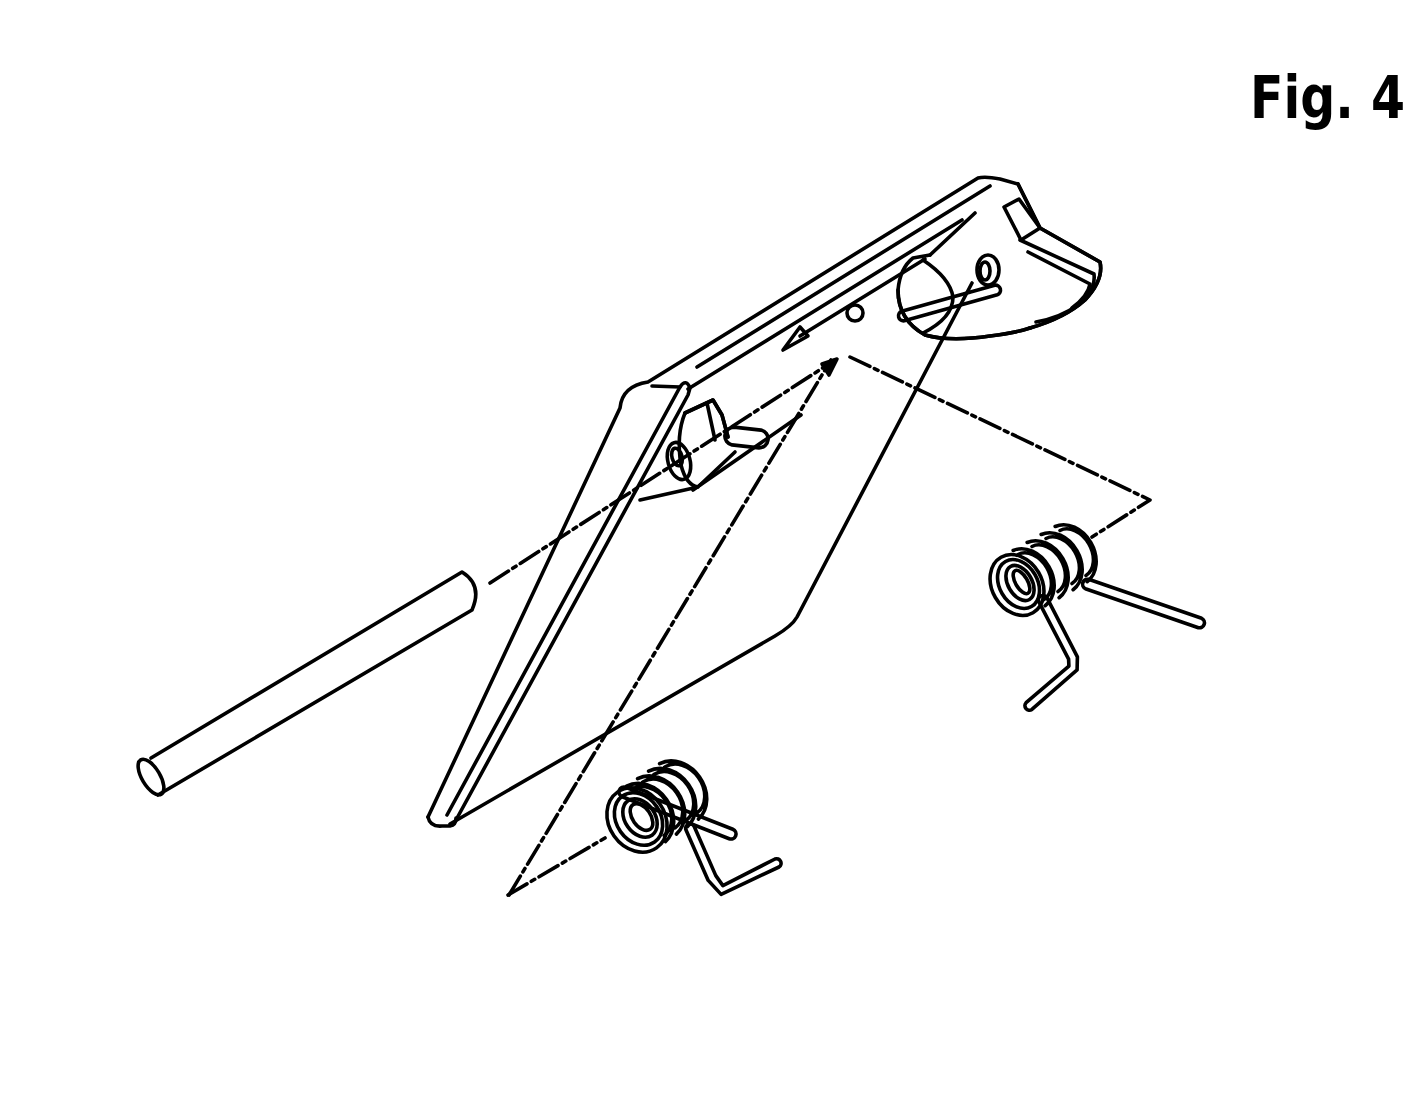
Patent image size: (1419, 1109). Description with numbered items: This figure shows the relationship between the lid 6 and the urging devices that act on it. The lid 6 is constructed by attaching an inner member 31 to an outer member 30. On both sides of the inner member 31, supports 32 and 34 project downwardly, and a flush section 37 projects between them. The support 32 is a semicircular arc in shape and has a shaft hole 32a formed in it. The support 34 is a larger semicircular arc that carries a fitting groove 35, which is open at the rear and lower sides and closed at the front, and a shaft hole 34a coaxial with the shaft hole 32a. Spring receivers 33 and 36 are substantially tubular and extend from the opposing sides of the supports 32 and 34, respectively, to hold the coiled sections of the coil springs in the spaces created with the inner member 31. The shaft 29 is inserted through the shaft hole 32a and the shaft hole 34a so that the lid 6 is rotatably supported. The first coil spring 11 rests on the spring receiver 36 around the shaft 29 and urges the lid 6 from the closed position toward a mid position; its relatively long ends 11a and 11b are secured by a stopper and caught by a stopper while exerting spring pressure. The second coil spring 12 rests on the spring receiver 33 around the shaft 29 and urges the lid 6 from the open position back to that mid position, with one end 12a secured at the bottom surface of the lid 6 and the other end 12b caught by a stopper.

The lid 6 is at (288, 822).
The first coil spring 11 is at (1000, 602).
The end of first coil spring 11a is at (1049, 708).
The end of first coil spring 11b is at (1181, 608).
The second coil spring 12 is at (647, 856).
The end of second coil spring 12a is at (727, 820).
The end of second coil spring 12b is at (770, 878).
The shaft 29 is at (227, 729).
The outer member 30 is at (440, 816).
The inner member 31 is at (452, 824).
The support 32 is at (707, 422).
The shaft hole 32a is at (674, 457).
The spring receiver 33 is at (742, 455).
The support 34 is at (1028, 313).
The shaft hole 34a is at (977, 255).
The fitting groove 35 is at (1060, 255).
The spring receiver 36 is at (968, 322).
The flush section 37 is at (851, 307).